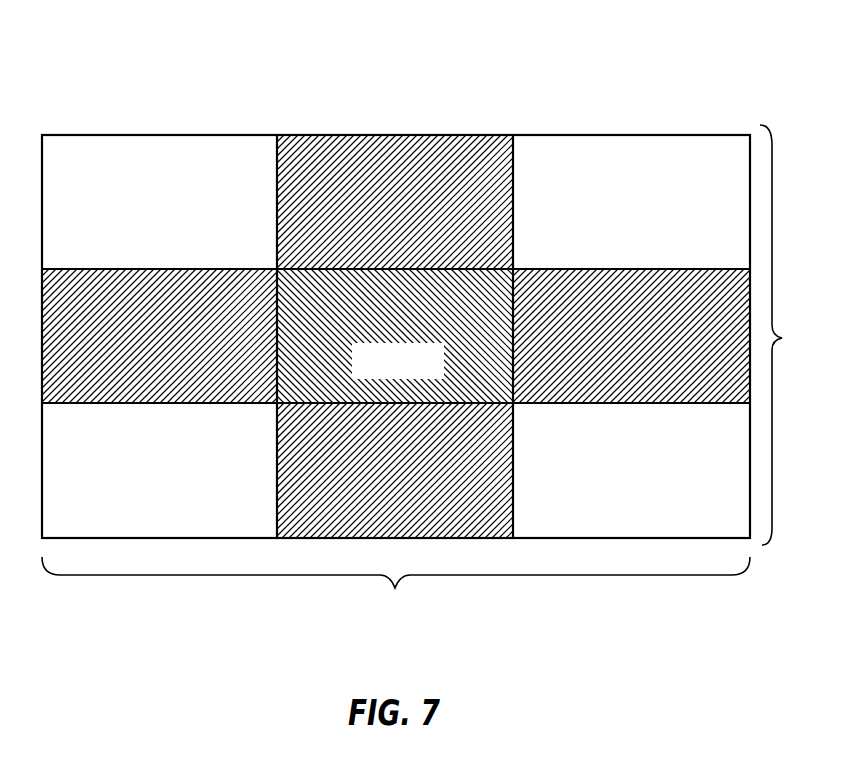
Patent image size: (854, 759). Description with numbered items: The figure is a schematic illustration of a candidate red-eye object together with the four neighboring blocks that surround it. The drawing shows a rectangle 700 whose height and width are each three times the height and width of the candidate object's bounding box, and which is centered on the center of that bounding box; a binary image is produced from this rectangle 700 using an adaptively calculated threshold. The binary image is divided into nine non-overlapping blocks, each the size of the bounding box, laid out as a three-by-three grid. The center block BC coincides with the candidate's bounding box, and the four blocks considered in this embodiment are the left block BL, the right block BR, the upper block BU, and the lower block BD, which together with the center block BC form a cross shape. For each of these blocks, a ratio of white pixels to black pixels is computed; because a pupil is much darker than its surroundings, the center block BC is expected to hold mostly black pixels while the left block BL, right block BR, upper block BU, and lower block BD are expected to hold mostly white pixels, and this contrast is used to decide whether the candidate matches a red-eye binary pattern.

The rectangle 700 is at (436, 328).
The upper neighboring block BU is at (395, 202).
The left neighboring block BL is at (159, 336).
The center block BC is at (395, 336).
The right neighboring block BR is at (631, 336).
The lower neighboring block BD is at (395, 470).